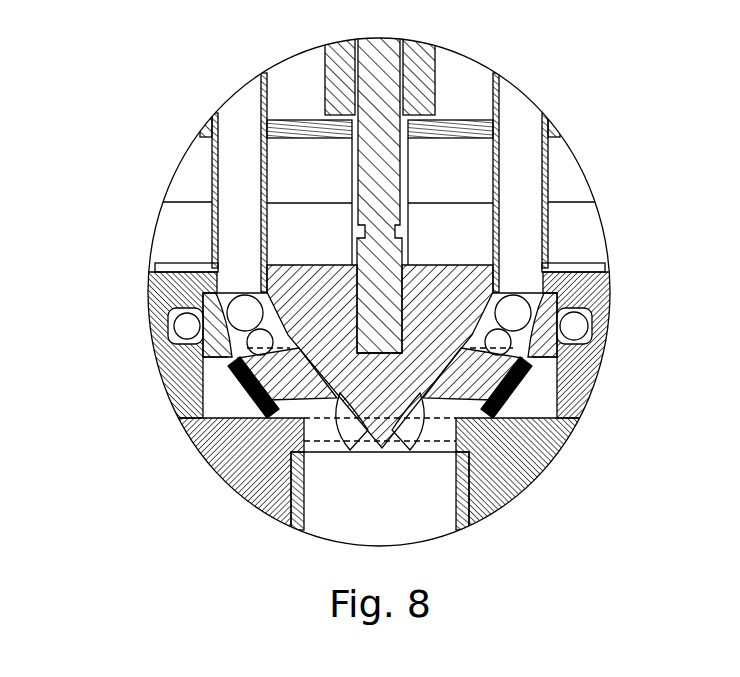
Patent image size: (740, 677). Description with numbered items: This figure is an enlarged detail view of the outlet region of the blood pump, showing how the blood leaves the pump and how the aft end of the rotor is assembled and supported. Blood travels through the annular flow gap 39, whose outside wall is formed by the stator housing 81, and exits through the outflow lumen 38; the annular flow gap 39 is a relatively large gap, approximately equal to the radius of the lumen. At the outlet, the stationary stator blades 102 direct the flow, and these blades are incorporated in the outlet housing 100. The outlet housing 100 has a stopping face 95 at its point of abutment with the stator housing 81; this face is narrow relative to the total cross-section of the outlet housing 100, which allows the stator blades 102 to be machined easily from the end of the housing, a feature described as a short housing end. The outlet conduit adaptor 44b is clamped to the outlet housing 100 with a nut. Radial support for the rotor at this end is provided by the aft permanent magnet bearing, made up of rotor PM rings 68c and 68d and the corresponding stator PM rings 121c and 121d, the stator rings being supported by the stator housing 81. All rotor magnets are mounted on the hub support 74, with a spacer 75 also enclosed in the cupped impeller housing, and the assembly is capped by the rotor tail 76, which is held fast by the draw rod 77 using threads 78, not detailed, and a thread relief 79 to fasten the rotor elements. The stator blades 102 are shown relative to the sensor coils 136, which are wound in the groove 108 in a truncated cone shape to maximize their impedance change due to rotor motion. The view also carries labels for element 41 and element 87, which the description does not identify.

The outflow lumen 38 is at (352, 520).
The annular flow gap 39 is at (237, 130).
The nozzle housing 41 is at (227, 480).
The outlet conduit adaptor 44b is at (471, 522).
The rotor PM ring 68c is at (287, 168).
The rotor PM ring 68d is at (282, 230).
The hub support 74 is at (337, 73).
The spacer 75 is at (293, 118).
The rotor tail 76 is at (253, 323).
The draw rod 77 is at (368, 195).
The threads 78 is at (407, 307).
The thread relief 79 is at (395, 230).
The stator housing 81 is at (583, 368).
The O-ring 87 is at (576, 327).
The stopping face 95 is at (188, 308).
The outlet housing 100 is at (505, 464).
The stator blades 102 is at (250, 383).
The groove 108 is at (538, 398).
The stator PM ring 121c is at (193, 157).
The stator PM ring 121d is at (187, 251).
The sensor coils 136 is at (497, 405).